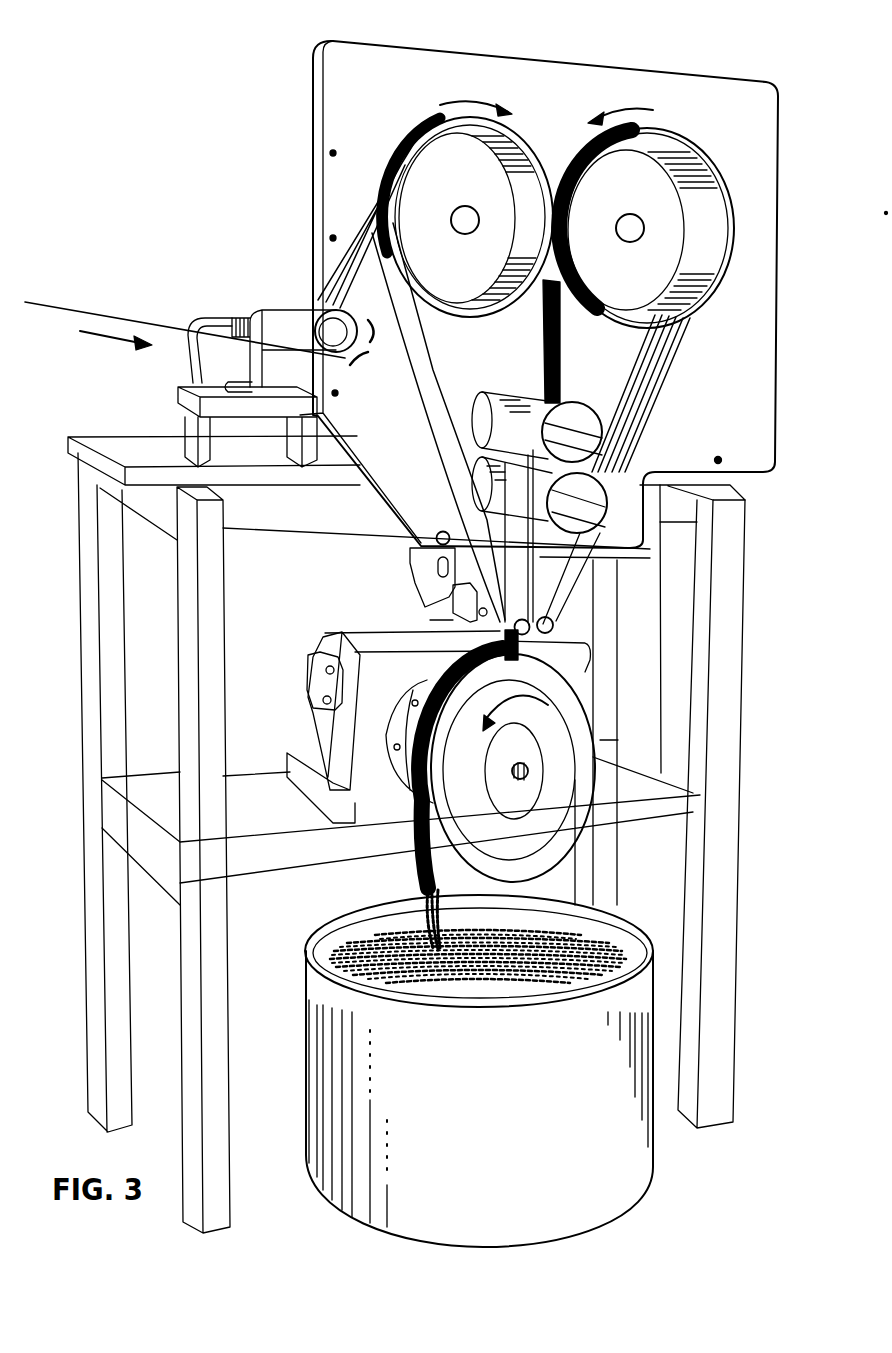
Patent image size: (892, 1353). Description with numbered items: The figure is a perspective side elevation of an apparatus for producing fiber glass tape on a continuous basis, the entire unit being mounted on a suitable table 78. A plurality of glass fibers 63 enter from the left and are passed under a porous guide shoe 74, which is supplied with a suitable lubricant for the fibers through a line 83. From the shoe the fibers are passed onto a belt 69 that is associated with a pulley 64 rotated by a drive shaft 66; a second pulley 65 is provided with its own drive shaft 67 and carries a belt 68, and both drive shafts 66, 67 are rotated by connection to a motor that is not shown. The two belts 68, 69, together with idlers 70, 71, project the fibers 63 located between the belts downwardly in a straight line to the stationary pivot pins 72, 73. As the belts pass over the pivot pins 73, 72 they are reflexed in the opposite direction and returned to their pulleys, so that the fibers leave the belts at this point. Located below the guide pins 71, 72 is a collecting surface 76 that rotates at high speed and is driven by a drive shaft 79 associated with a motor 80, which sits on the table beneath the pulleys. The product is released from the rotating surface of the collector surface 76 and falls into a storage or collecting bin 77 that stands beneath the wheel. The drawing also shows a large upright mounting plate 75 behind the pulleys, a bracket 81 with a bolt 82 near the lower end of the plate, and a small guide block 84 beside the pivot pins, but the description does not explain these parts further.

The glass fibers 63 is at (55, 307).
The pulley 64 is at (487, 287).
The second pulley 65 is at (650, 203).
The drive shaft 66 is at (473, 208).
The drive shaft 67 is at (628, 236).
The belt 68 is at (641, 351).
The belt 69 is at (423, 353).
The idler 70 is at (575, 402).
The idler 71 is at (593, 520).
The stationary pivot pin 72 is at (553, 624).
The stationary pivot pin 73 is at (532, 634).
The porous guide shoe 74 is at (285, 308).
The mounting plate 75 is at (309, 148).
The collecting surface 76 is at (580, 695).
The collecting bin 77 is at (648, 1150).
The table 78 is at (745, 567).
The drive shaft 79 is at (522, 778).
The motor 80 is at (335, 808).
The guide bracket 81 is at (443, 560).
The bolt 82 is at (436, 539).
The line 83 is at (225, 316).
The guide block 84 is at (453, 618).